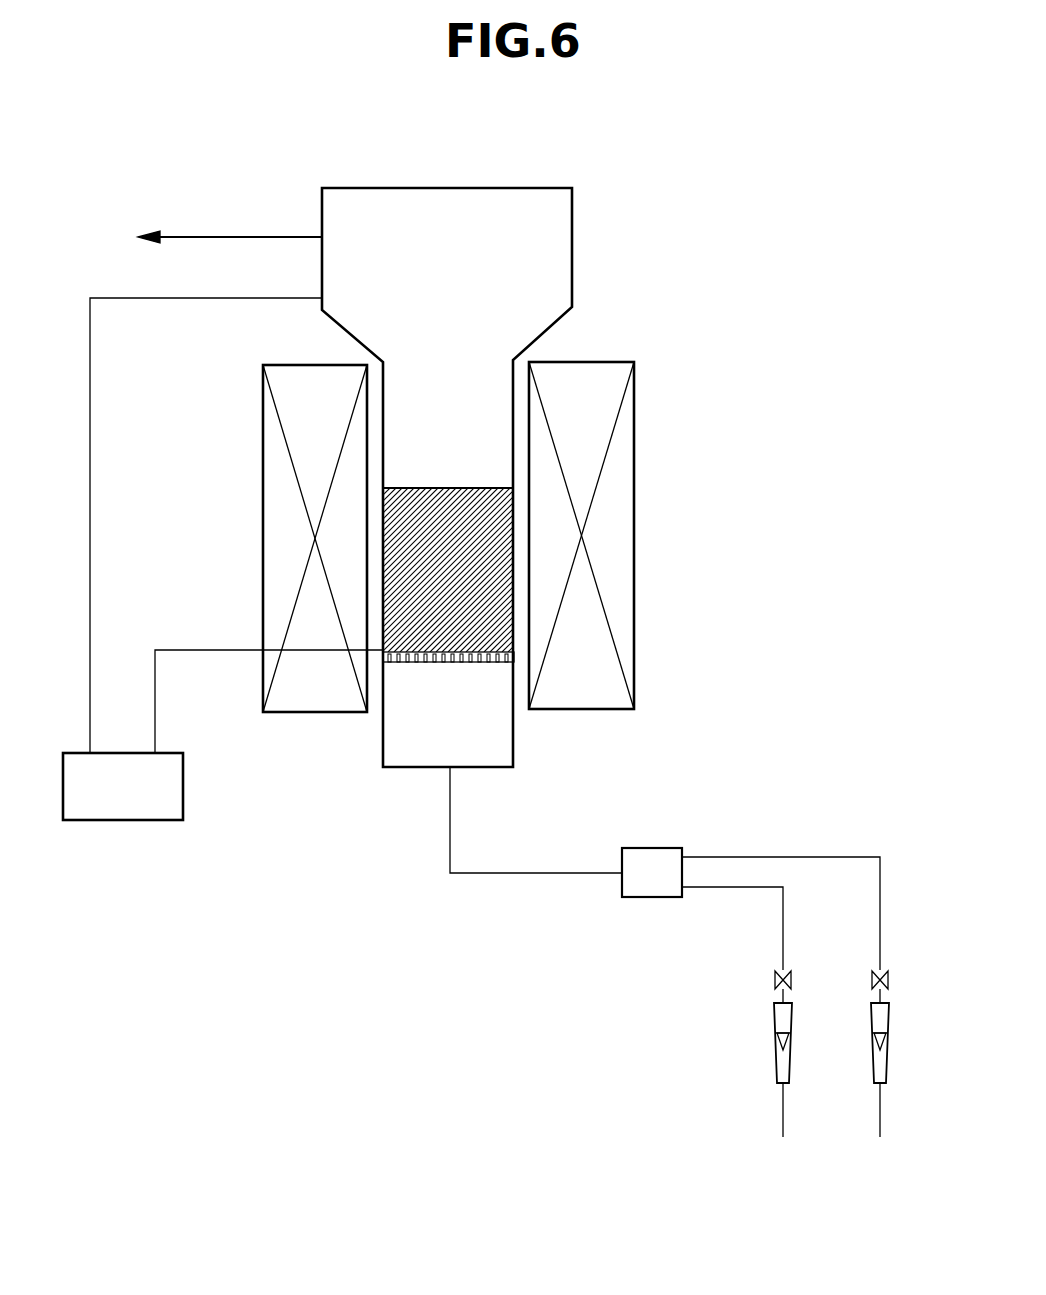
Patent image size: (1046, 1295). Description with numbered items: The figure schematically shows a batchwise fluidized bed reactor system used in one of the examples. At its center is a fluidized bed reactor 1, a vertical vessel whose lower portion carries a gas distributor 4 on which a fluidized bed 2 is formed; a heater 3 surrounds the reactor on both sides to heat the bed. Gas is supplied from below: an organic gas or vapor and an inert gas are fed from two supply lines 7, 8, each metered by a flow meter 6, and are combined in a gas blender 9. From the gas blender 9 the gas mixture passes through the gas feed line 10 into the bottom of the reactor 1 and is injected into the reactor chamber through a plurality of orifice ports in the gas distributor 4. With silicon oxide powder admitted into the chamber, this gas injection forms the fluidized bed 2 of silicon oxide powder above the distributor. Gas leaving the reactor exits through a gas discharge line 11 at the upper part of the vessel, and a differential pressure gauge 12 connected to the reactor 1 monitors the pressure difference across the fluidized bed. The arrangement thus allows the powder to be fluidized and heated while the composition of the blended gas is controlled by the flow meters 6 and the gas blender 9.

The fluidized bed reactor 1 is at (516, 414).
The fluidized bed 2 is at (477, 512).
The heater 3 is at (634, 560).
The gas distributor 4 is at (514, 655).
The flow meters 6 is at (776, 1058).
The line 7 is at (880, 937).
The line 8 is at (783, 937).
The gas blender 9 is at (652, 848).
The gas feed line 10 is at (450, 818).
The gas discharge line 11 is at (275, 237).
The differential pressure gauge 12 is at (183, 788).